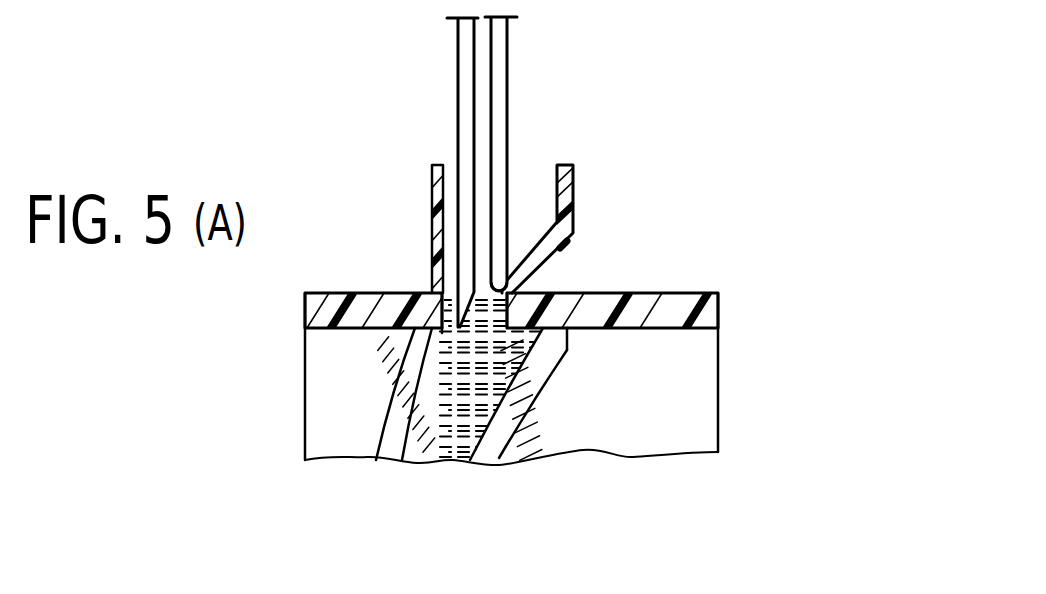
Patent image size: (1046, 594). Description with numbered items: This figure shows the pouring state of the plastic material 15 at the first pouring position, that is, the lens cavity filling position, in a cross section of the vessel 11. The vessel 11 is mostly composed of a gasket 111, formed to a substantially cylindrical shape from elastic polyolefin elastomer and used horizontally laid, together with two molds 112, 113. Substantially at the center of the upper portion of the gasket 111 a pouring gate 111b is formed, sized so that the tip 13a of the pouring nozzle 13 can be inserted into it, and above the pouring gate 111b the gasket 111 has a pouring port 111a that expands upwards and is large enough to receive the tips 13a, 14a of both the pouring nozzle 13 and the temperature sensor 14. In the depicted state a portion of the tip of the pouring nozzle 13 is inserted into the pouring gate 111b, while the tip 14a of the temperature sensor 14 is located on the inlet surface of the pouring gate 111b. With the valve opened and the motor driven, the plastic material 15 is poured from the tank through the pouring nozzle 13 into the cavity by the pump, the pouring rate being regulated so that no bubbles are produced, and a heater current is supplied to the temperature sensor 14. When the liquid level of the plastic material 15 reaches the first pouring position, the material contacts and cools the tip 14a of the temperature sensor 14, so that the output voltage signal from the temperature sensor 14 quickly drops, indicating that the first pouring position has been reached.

The vessel 11 is at (685, 155).
The pouring nozzle 13 is at (458, 88).
The tip of the pouring nozzle 13a is at (428, 293).
The temperature sensor 14 is at (507, 67).
The tip of the temperature sensor 14a is at (509, 285).
The plastic material 15 is at (432, 440).
The gasket 111 is at (706, 294).
The pouring port 111a is at (574, 218).
The pouring gate 111b is at (498, 316).
The mold 112 is at (390, 397).
The mold 113 is at (530, 395).